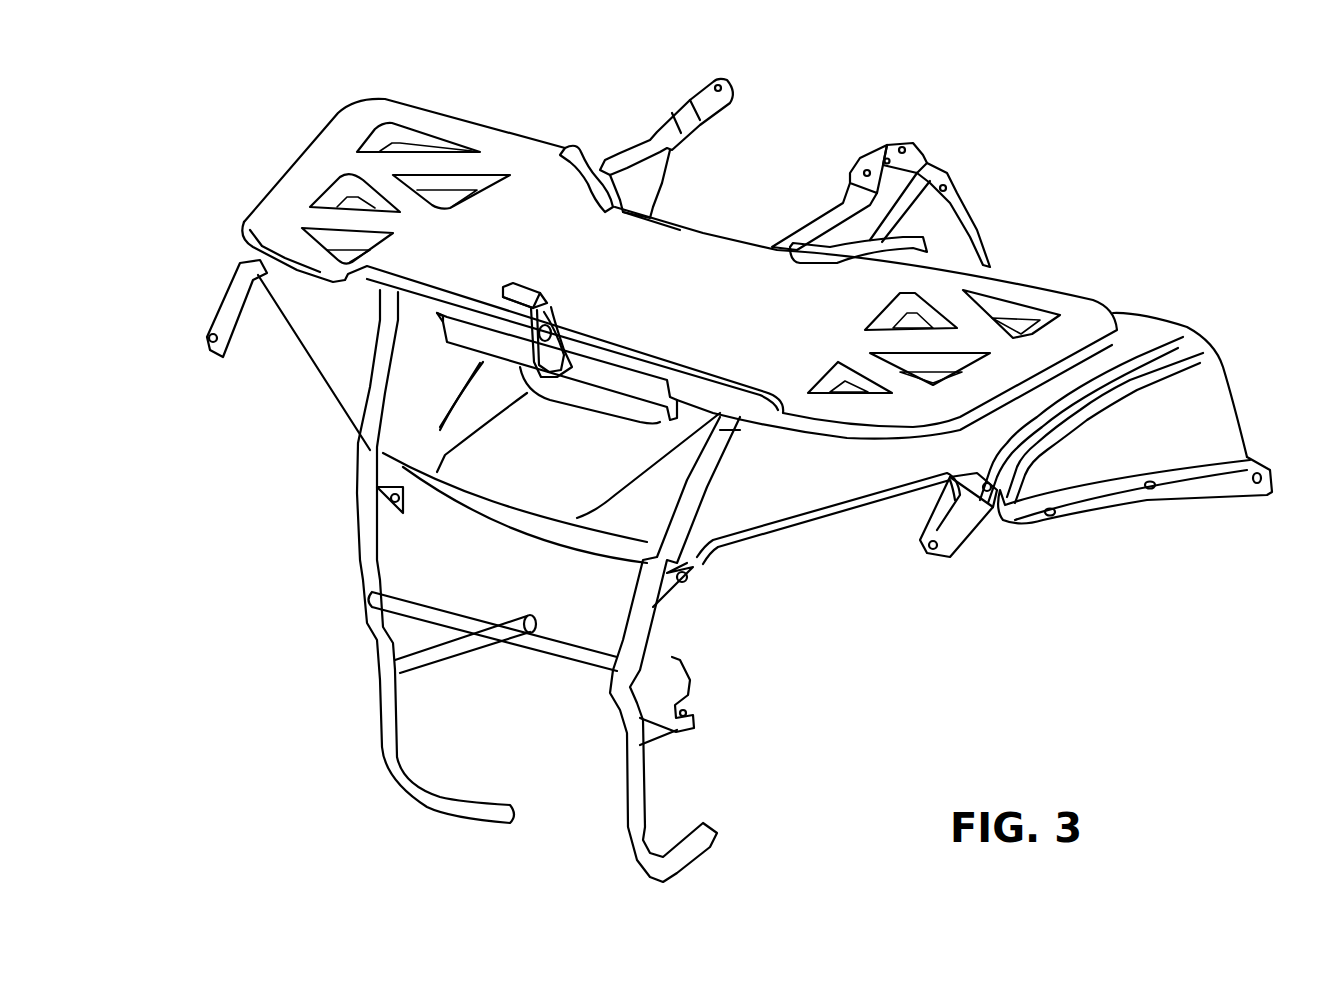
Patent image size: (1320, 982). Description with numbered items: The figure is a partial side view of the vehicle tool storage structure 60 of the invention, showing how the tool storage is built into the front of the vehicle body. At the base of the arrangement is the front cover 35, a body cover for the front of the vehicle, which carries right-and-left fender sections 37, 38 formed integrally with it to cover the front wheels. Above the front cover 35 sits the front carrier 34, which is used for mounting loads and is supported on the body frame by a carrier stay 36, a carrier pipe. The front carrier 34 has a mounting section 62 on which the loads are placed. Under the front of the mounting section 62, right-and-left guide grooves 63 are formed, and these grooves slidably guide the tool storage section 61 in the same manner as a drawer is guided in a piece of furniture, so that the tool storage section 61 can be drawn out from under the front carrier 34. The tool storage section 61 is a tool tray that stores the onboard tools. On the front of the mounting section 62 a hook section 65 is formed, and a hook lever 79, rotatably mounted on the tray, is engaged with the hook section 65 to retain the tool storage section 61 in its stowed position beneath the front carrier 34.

The vehicle tool storage structure 60 is at (250, 100).
The mounting section 62 is at (680, 258).
The guide grooves 63 is at (440, 315).
The hook section 65 is at (553, 302).
The hook lever 79 is at (530, 270).
The front carrier 34 is at (1060, 264).
The carrier stay 36 is at (335, 545).
The right fender section 38 is at (337, 338).
The tool storage section 61 is at (650, 410).
The front cover 35 is at (822, 548).
The left fender section 37 is at (818, 474).